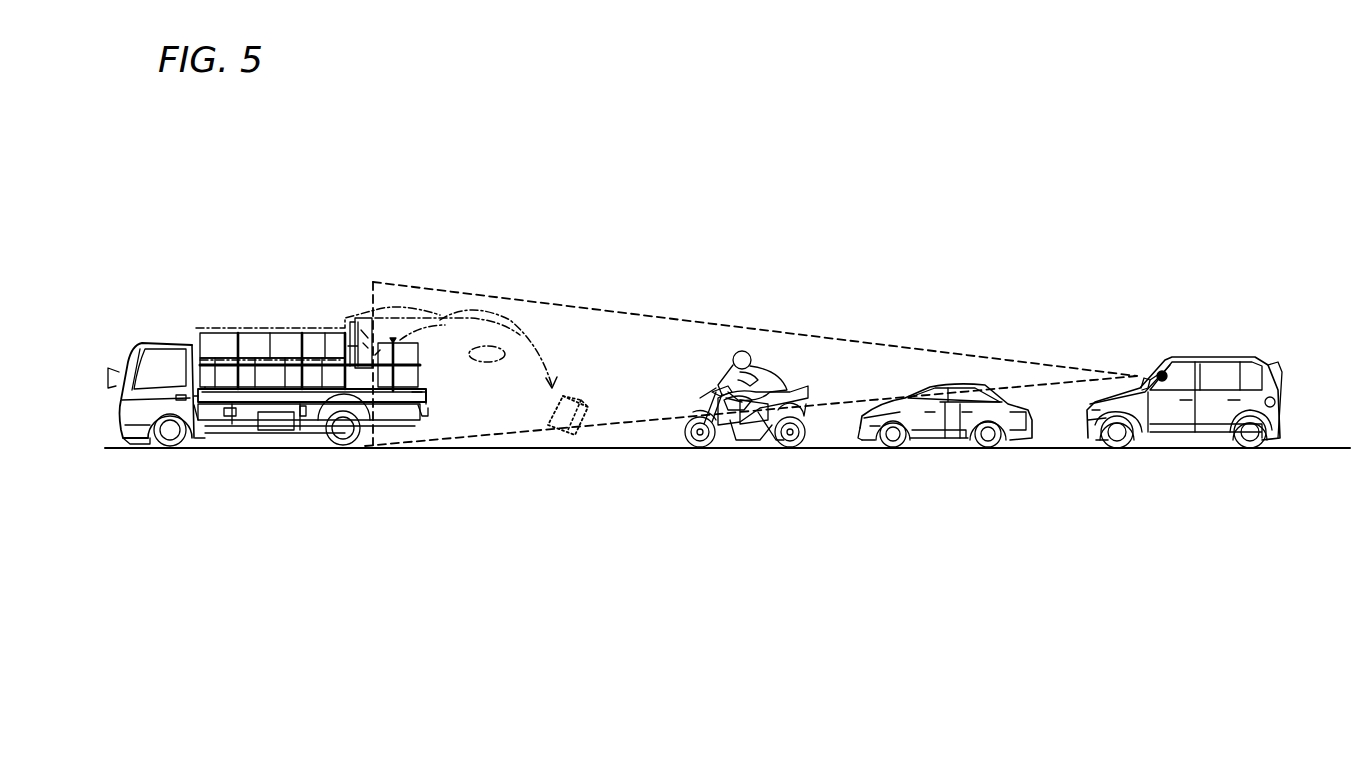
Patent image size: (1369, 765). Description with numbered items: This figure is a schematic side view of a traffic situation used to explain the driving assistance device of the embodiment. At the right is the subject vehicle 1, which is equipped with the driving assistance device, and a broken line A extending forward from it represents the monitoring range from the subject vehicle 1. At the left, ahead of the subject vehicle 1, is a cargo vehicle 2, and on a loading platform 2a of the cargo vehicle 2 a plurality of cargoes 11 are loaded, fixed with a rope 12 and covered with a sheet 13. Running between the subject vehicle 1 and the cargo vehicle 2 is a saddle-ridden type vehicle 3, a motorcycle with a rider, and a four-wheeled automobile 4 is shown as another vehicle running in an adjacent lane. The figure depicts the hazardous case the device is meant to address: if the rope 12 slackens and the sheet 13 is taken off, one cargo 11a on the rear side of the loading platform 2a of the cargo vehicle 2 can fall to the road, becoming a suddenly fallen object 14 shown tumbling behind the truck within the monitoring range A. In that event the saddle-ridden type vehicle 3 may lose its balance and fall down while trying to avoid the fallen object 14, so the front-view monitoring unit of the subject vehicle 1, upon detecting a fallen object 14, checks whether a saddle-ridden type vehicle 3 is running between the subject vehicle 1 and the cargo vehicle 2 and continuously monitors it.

The subject vehicle 1 is at (1198, 358).
The cargo vehicle 2 is at (157, 342).
The loading platform 2a is at (408, 403).
The saddle-ridden type vehicle 3 is at (793, 378).
The four-wheeled automobile 4 is at (945, 383).
The cargoes 11 is at (226, 338).
The cargo 11a is at (357, 320).
The rope 12 is at (293, 373).
The sheet 13 is at (298, 328).
The fallen object 14 is at (588, 405).
The monitoring range A is at (923, 345).